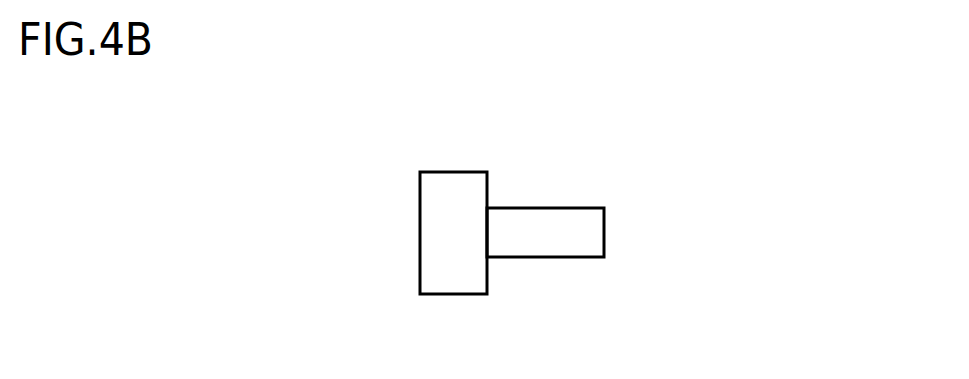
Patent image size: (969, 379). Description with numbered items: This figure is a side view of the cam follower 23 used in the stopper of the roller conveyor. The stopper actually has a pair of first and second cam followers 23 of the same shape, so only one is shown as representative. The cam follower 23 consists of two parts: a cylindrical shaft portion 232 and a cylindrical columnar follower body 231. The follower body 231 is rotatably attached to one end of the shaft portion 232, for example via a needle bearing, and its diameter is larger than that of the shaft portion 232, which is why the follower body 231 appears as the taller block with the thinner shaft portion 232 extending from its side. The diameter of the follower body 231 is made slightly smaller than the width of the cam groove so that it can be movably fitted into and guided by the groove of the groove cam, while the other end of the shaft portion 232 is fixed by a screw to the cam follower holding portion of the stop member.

The cam follower 23 is at (655, 216).
The follower body 231 is at (458, 172).
The shaft portion 232 is at (580, 257).